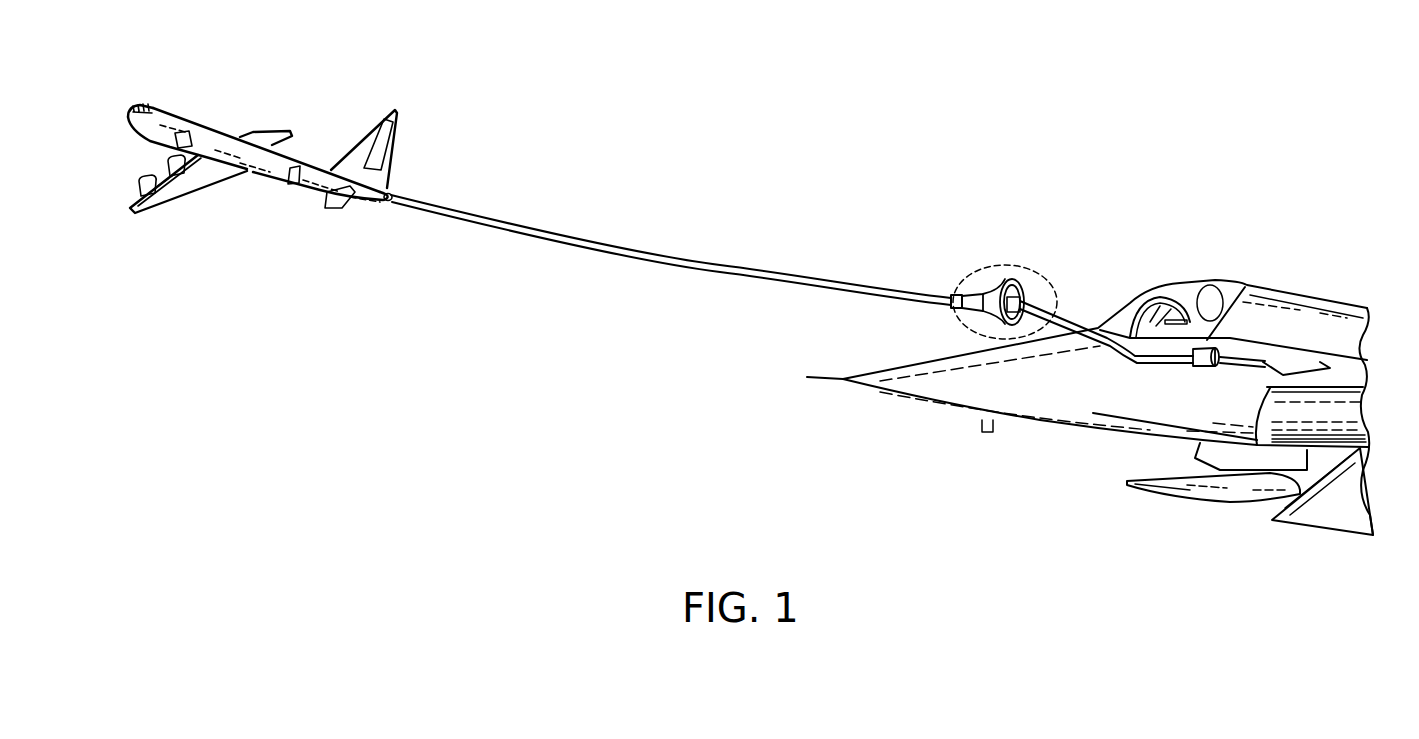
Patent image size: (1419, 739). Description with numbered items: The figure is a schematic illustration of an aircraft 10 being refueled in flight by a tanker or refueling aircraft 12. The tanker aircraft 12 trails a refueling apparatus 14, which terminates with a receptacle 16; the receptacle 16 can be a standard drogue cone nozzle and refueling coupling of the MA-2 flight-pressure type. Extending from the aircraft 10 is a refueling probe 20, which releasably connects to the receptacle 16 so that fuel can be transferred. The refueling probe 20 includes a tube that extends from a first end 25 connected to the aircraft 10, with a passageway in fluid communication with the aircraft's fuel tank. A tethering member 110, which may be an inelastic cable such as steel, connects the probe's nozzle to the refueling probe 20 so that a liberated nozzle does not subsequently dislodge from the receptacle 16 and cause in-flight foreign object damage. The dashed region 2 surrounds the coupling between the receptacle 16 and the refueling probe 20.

The aerial refueling coupling system 2 is at (957, 282).
The aircraft 10 is at (1284, 280).
The tanker aircraft 12 is at (393, 100).
The refueling apparatus 14 is at (673, 258).
The receptacle 16 is at (1013, 279).
The refueling probe 20 is at (1071, 309).
The first end 25 is at (1190, 365).
The tethering member 110 is at (1028, 297).